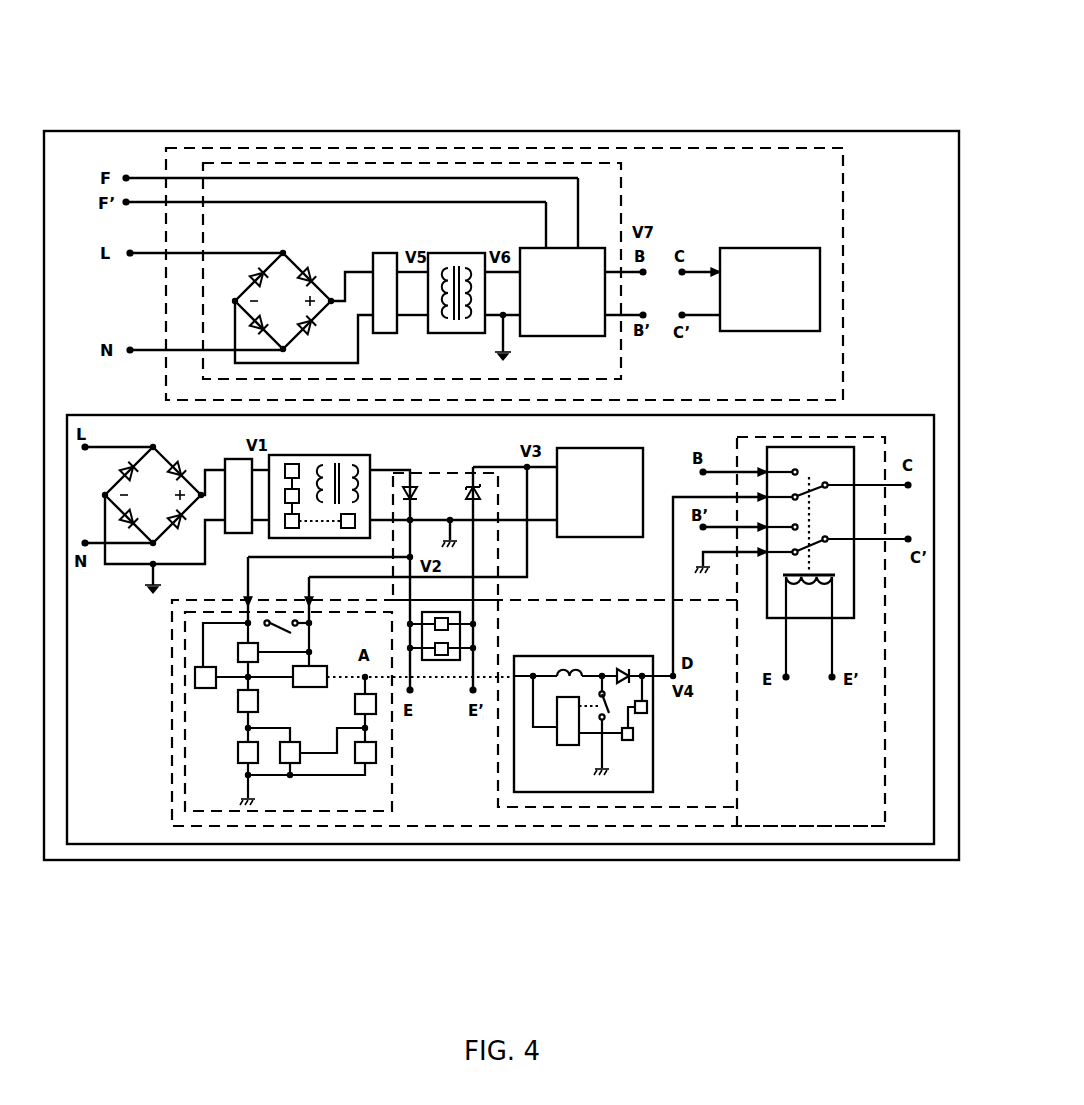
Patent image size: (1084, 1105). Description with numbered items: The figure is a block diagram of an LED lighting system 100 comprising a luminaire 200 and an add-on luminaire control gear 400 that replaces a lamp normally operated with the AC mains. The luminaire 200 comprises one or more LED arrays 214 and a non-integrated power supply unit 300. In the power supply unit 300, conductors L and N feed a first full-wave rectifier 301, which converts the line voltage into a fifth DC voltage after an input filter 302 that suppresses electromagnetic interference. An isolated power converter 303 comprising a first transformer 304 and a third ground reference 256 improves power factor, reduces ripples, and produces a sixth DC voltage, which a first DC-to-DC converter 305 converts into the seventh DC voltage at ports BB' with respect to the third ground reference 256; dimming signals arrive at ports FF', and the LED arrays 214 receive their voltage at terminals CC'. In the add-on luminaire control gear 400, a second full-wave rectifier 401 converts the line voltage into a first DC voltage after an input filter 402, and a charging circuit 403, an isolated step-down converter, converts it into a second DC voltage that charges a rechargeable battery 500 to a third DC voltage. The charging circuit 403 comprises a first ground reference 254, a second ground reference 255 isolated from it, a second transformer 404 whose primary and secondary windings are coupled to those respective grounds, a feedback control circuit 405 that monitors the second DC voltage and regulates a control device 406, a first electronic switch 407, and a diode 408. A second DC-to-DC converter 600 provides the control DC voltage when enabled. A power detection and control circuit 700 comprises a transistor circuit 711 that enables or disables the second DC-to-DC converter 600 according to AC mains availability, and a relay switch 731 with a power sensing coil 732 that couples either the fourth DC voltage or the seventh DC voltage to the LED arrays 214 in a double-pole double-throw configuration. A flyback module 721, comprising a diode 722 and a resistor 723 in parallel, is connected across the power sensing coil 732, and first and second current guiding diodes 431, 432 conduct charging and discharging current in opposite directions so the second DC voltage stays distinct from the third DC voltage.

The LED lighting system 100 is at (398, 129).
The luminaire 200 is at (552, 146).
The power supply unit 300 is at (450, 160).
The first full-wave rectifier 301 is at (270, 245).
The input filter 302 is at (388, 253).
The isolated power converter 303 is at (481, 182).
The first transformer 304 is at (455, 270).
The first DC-to-DC converter 305 is at (586, 248).
The LED arrays 214 is at (770, 248).
The third ground reference 256 is at (512, 357).
The add-on luminaire control gear 400 is at (688, 844).
The second full-wave rectifier 401 is at (133, 442).
The input filter 402 is at (228, 460).
The charging circuit 403 is at (353, 494).
The second transformer 404 is at (362, 470).
The feedback control circuit 405 is at (348, 530).
The control device 406 is at (292, 530).
The first electronic switch 407 is at (290, 505).
The diode 408 is at (293, 464).
The first current guiding diode 431 is at (417, 490).
The second current guiding diode 432 is at (482, 496).
The first ground reference 254 is at (148, 596).
The second ground reference 255 is at (450, 550).
The rechargeable battery 500 is at (613, 537).
The second DC-to-DC converter 600 is at (655, 735).
The power detection and control circuit 700 is at (537, 826).
The transistor circuit 711 is at (332, 812).
The flyback module 721 is at (490, 681).
The diode 722 is at (449, 624).
The resistor 723 is at (449, 648).
The relay switch 731 is at (833, 631).
The power sensing coil 732 is at (806, 588).